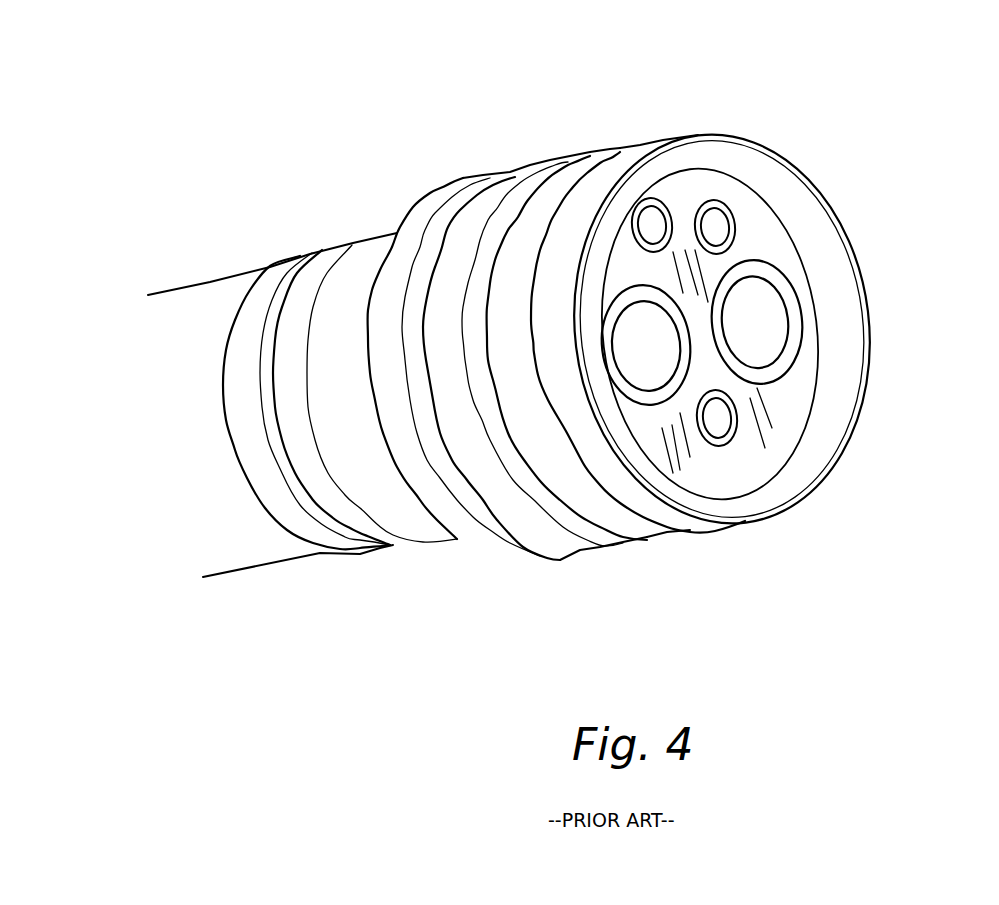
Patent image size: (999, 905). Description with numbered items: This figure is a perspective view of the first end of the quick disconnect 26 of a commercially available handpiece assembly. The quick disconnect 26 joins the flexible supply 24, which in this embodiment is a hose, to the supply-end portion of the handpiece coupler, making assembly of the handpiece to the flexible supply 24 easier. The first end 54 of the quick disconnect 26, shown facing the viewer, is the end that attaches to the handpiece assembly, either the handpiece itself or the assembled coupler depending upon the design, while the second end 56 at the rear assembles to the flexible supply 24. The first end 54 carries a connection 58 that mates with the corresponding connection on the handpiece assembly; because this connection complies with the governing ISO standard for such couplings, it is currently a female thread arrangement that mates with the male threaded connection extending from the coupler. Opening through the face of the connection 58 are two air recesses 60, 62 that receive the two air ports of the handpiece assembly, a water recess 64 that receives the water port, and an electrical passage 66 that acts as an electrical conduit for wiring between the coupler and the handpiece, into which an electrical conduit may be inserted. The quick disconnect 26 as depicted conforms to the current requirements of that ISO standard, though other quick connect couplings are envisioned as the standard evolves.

The flexible supply 24 is at (227, 295).
The quick disconnect 26 is at (462, 177).
The first end 54 is at (618, 163).
The second end 56 is at (248, 403).
The connection 58 is at (837, 302).
The air recess 60 is at (655, 328).
The air recess 62 is at (762, 303).
The water recess 64 is at (725, 427).
The electrical passage 66 is at (715, 233).